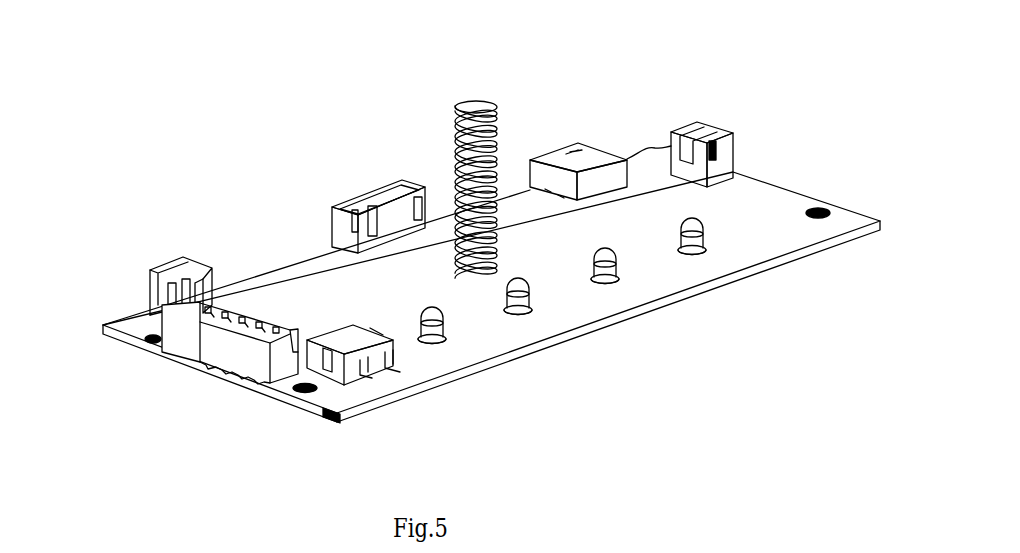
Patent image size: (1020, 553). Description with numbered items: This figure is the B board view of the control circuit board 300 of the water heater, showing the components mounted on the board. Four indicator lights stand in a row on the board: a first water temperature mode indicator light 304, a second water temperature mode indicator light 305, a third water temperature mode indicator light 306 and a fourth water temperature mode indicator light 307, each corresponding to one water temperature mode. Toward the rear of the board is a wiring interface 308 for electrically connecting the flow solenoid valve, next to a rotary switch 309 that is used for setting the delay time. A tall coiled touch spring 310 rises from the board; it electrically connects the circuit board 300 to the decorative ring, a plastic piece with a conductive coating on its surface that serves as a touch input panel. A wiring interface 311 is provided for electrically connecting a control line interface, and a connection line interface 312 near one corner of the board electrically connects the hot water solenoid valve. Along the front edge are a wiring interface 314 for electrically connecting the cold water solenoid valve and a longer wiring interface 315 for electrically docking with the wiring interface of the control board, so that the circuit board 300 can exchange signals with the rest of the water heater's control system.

The circuit board 300 is at (782, 203).
The first water temperature mode indicator light 304 is at (447, 353).
The second water temperature mode indicator light 305 is at (532, 323).
The third water temperature mode indicator light 306 is at (622, 297).
The fourth water temperature mode indicator light 307 is at (707, 268).
The wiring interface 308 is at (717, 117).
The rotary switch 309 is at (570, 140).
The touch spring 310 is at (453, 102).
The wiring interface 311 is at (358, 183).
The connection line interface 312 is at (158, 258).
The wiring interface 314 is at (182, 332).
The wiring interface 315 is at (242, 355).